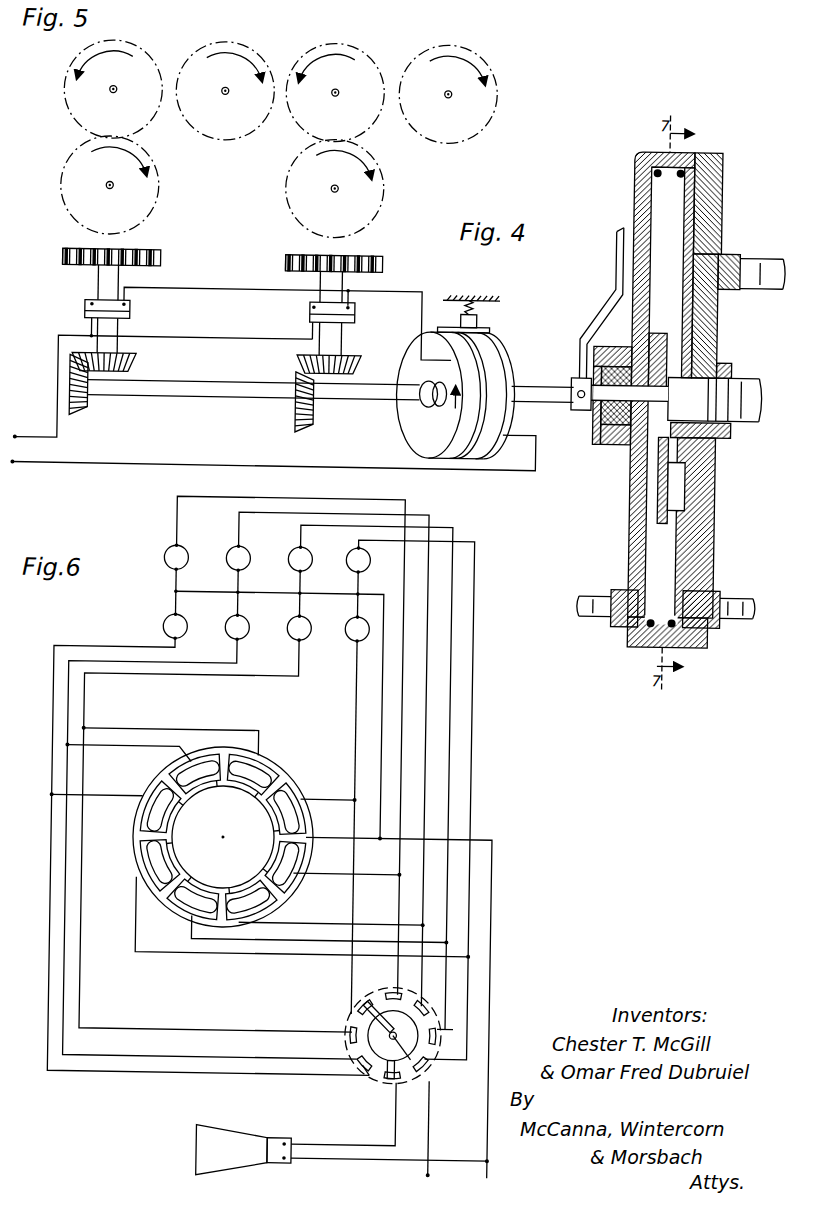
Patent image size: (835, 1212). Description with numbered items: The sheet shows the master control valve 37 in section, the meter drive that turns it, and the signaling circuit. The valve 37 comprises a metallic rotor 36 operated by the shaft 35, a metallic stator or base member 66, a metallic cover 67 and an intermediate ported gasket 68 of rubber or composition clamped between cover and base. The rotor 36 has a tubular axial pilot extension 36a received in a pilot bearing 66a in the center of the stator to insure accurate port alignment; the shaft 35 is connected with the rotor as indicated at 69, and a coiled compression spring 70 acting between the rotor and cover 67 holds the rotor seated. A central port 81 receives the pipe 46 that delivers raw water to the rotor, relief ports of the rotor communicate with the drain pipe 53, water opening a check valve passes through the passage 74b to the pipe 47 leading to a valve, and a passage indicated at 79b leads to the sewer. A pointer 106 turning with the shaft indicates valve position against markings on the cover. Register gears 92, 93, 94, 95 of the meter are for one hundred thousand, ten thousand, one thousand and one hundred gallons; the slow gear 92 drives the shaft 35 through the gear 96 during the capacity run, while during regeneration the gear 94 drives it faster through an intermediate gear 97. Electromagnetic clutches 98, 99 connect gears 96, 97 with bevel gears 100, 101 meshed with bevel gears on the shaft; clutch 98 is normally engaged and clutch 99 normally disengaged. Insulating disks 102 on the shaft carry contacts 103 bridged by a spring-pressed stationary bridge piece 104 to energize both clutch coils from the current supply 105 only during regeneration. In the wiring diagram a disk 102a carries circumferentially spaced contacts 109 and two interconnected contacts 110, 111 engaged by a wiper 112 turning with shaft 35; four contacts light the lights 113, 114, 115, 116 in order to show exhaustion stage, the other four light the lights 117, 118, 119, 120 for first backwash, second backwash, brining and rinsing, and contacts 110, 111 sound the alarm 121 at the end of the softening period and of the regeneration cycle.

In FIG. 5, the shaft 35 is at (531, 389).
In FIG. 4, the shaft 35 is at (629, 393).
In FIG. 6, the shaft 35 is at (400, 1031).
In FIG. 4, the rotor 36 is at (665, 475).
In FIG. 4, the tubular axial pilot extension 36a is at (720, 360).
In FIG. 4, the master control valve 37 is at (645, 150).
In FIG. 4, the pipe 46 is at (750, 415).
In FIG. 4, the pipe 47 is at (762, 258).
In FIG. 4, the drain pipe 53 is at (607, 611).
In FIG. 4, the stator 66 is at (722, 316).
In FIG. 4, the pilot bearing 66a is at (708, 433).
In FIG. 4, the cover 67 is at (637, 205).
In FIG. 4, the ported gasket 68 is at (706, 154).
In FIG. 4, the connection 69 is at (654, 365).
In FIG. 4, the coiled compression spring 70 is at (654, 648).
In FIG. 4, the passage 74b is at (734, 287).
In FIG. 4, the drain passage outlet 79b is at (744, 606).
In FIG. 4, the central port 81 is at (738, 372).
In FIG. 5, the register gear 92 is at (129, 56).
In FIG. 5, the register gear 93 is at (239, 52).
In FIG. 5, the register gear 94 is at (349, 55).
In FIG. 5, the register gear 95 is at (450, 53).
In FIG. 5, the gear 96 is at (147, 208).
In FIG. 5, the intermediate gear 97 is at (369, 203).
In FIG. 5, the electromagnetic clutch 98 is at (131, 314).
In FIG. 5, the electromagnetic clutch 99 is at (356, 319).
In FIG. 5, the bevel gear 100 is at (138, 365).
In FIG. 5, the bevel gear 101 is at (350, 368).
In FIG. 5, the insulating disks 102 is at (431, 440).
In FIG. 6, the disk 102a is at (375, 1077).
In FIG. 5, the contacts 103 is at (472, 364).
In FIG. 5, the stationary bridge piece 104 is at (487, 328).
In FIG. 5, the source of electric current supply 105 is at (15, 466).
In FIG. 6, the source of electric current supply 105 is at (492, 1172).
In FIG. 4, the pointer 106 is at (615, 277).
In FIG. 6, the contacts 109 is at (360, 1060).
In FIG. 6, the contact 110 is at (390, 993).
In FIG. 6, the contact 111 is at (391, 1076).
In FIG. 6, the wiper 112 is at (380, 1025).
In FIG. 6, the electric light 113 is at (147, 793).
In FIG. 6, the electric light 114 is at (207, 758).
In FIG. 6, the electric light 115 is at (277, 764).
In FIG. 6, the electric light 116 is at (302, 812).
In FIG. 6, the electric light 117 is at (294, 888).
In FIG. 6, the electric light 118 is at (242, 908).
In FIG. 6, the electric light 119 is at (193, 908).
In FIG. 6, the electric light 120 is at (148, 853).
In FIG. 6, the alarm 121 is at (223, 1141).